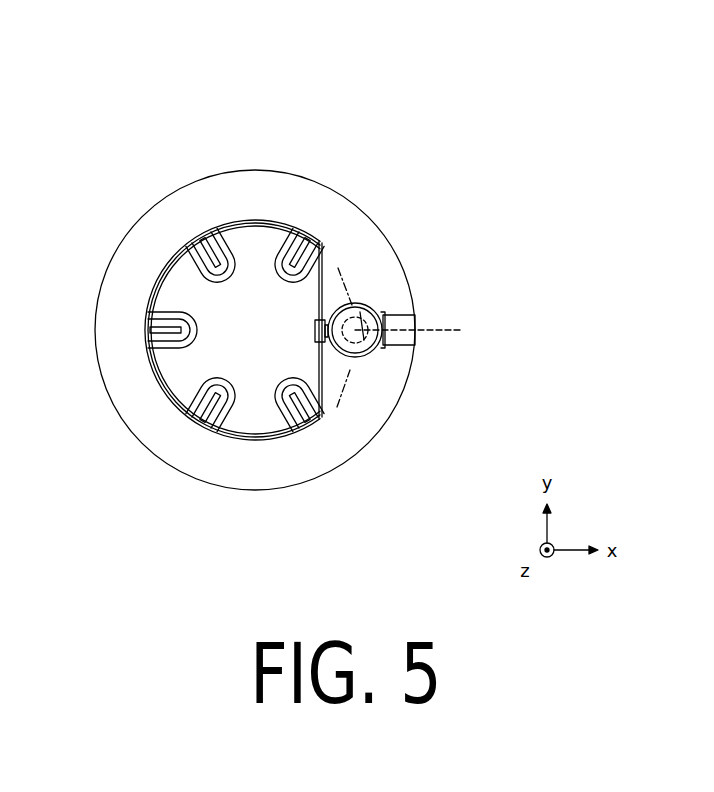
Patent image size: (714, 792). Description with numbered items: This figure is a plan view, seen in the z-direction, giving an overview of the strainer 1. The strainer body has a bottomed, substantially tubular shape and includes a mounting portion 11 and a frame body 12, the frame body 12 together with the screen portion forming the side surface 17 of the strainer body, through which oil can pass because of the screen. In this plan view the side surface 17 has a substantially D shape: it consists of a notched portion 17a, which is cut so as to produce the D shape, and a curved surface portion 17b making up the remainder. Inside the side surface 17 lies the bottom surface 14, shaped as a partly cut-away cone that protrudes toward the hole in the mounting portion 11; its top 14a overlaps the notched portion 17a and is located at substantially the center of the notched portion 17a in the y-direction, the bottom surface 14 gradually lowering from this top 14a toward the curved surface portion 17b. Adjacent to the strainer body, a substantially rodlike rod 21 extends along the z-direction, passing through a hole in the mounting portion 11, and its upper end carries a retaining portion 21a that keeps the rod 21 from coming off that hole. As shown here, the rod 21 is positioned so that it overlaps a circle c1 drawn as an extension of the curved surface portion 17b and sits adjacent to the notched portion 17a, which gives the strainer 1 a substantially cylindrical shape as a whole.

The strainer 1 is at (421, 63).
The mounting portion 11 is at (378, 267).
The frame body 12 is at (217, 260).
The bottom surface 14 is at (275, 395).
The top 14a is at (327, 375).
The side surface 17 is at (268, 255).
The notched portion 17a is at (328, 253).
The curved surface portion 17b is at (268, 242).
The rod 21 is at (414, 309).
The retaining portion 21a is at (380, 308).
The circle c1 is at (340, 387).